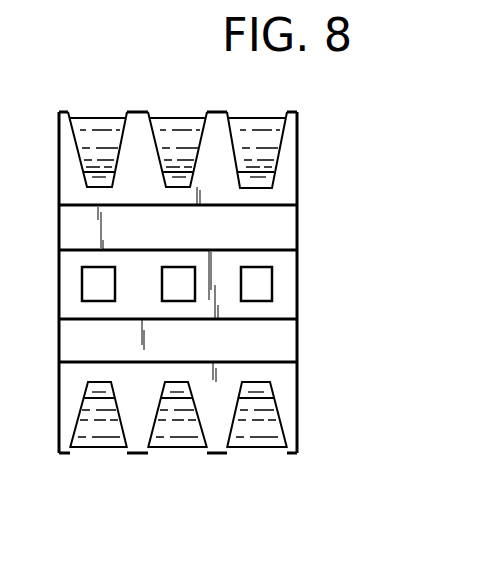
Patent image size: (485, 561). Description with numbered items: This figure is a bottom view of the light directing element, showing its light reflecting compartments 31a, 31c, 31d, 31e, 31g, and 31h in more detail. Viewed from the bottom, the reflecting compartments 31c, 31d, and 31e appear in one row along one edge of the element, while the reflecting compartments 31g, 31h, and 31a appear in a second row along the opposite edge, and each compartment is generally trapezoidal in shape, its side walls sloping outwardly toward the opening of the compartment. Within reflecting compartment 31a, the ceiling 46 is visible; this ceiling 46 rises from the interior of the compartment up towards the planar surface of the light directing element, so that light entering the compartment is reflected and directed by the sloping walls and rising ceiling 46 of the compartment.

The ceiling 46 is at (273, 430).
The light reflecting compartment 31a is at (253, 426).
The light reflecting compartment 31c is at (258, 143).
The light reflecting compartment 31d is at (178, 150).
The light reflecting compartment 31e is at (95, 138).
The light reflecting compartment 31g is at (99, 423).
The light reflecting compartment 31h is at (177, 415).